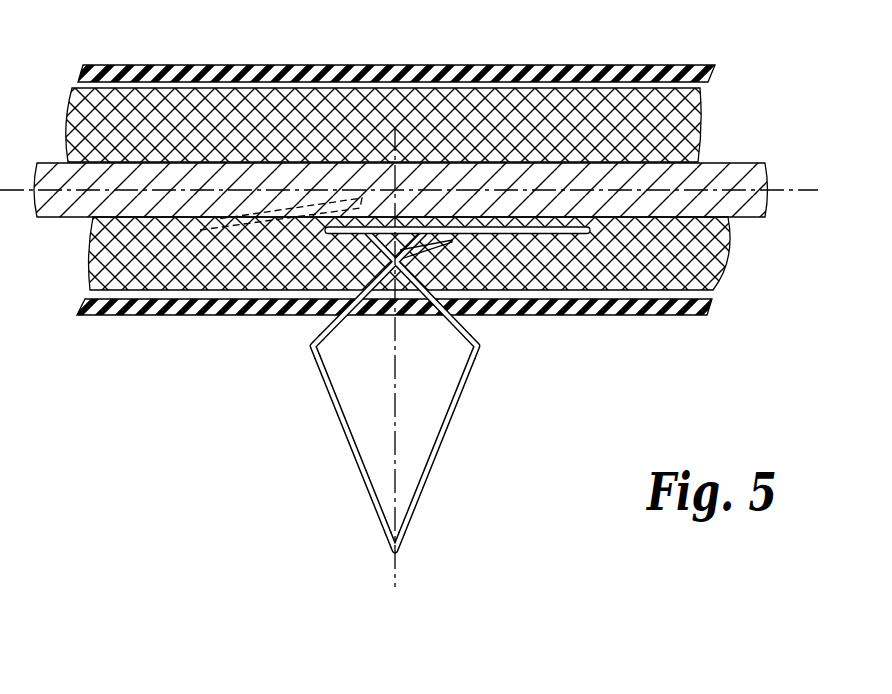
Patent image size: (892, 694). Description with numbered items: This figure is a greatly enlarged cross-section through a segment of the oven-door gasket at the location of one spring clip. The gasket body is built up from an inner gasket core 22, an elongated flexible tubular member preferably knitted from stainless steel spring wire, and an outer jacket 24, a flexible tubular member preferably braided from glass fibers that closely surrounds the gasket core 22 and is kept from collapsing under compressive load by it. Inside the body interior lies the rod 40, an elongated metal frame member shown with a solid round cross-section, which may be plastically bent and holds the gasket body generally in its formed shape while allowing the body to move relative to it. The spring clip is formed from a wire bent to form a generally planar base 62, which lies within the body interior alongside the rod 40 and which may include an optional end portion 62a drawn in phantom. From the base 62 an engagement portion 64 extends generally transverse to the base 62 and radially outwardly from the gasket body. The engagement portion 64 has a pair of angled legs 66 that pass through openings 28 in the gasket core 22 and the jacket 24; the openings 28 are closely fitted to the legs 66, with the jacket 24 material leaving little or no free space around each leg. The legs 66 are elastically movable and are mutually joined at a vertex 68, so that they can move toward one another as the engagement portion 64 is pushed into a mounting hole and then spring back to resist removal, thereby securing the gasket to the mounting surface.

The gasket core 22 is at (678, 135).
The jacket 24 is at (650, 65).
The rod 40 is at (73, 205).
The base 62 is at (555, 233).
The end portion 62a is at (300, 206).
The engagement portion 64 is at (390, 416).
The legs 66 is at (333, 401).
The openings 28 is at (308, 323).
The vertex 68 is at (397, 553).